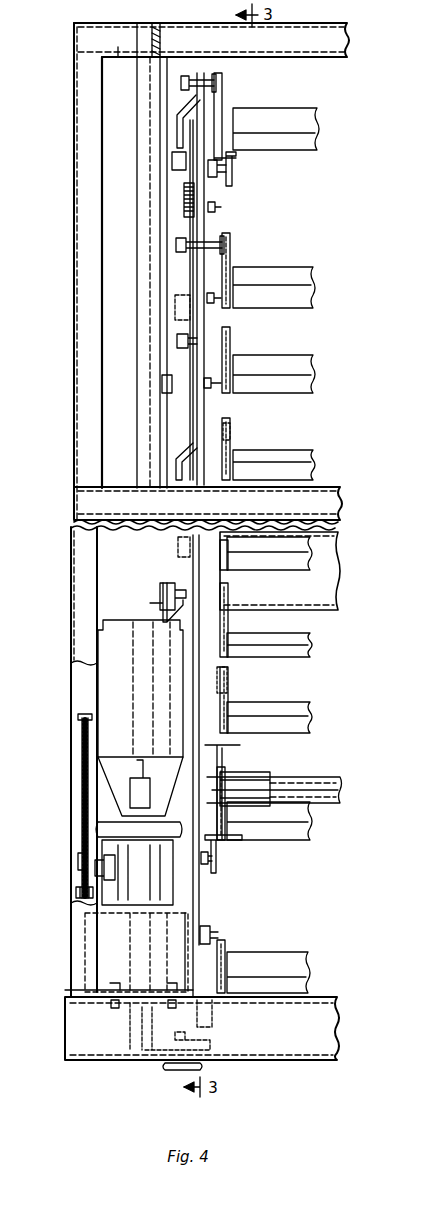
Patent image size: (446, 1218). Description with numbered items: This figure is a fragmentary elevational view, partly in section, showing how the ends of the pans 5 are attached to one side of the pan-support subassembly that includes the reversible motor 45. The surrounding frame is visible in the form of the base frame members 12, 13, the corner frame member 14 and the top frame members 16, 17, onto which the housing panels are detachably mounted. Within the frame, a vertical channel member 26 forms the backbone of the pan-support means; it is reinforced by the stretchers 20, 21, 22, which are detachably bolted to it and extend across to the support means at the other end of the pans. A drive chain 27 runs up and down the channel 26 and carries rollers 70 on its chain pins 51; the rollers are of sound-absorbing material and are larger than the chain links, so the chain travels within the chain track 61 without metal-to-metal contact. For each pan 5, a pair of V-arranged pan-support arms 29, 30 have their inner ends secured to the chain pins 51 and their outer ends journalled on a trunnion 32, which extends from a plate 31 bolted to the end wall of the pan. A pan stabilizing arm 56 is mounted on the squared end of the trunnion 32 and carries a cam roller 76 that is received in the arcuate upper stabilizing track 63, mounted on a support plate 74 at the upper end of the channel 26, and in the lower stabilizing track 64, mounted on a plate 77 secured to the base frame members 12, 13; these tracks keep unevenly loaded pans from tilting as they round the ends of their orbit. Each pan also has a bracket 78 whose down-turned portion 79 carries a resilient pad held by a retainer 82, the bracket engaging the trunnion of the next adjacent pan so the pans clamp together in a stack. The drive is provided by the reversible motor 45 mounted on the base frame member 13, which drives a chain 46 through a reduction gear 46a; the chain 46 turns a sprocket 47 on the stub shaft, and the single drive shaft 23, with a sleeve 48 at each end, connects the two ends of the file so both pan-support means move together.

The pan 5 is at (310, 142).
The base frame member 12 is at (141, 1058).
The base frame member 13 is at (275, 1048).
The corner frame member 14 is at (72, 600).
The top frame member 16 is at (142, 52).
The top frame member 17 is at (118, 52).
The stretcher 20 is at (183, 36).
The stretcher 21 is at (330, 508).
The stretcher 22 is at (332, 580).
The drive shaft 23 is at (320, 785).
The vertical channel member 26 is at (147, 401).
The drive chain 27 is at (183, 191).
The pan-support arm 29 is at (205, 127).
The pan-support arm 30 is at (198, 118).
The plate 31 is at (228, 440).
The trunnion 32 is at (218, 80).
The reversible motor 45 is at (115, 697).
The chain 46 is at (76, 893).
The reduction gear 46a is at (140, 876).
The sprocket 47 is at (80, 752).
The sleeve 48 is at (250, 776).
The chain pin 51 is at (216, 207).
The pan stabilizing arm 56 is at (178, 108).
The chain track 61 is at (178, 416).
The upper stabilizing track 63 is at (178, 163).
The lower stabilizing track 64 is at (162, 585).
The roller 70 is at (188, 313).
The support plate 74 is at (172, 338).
The cam roller 76 is at (165, 385).
The plate 77 is at (160, 604).
The bracket 78 is at (216, 845).
The down-turned portion 79 is at (226, 165).
The retainer 82 is at (222, 176).